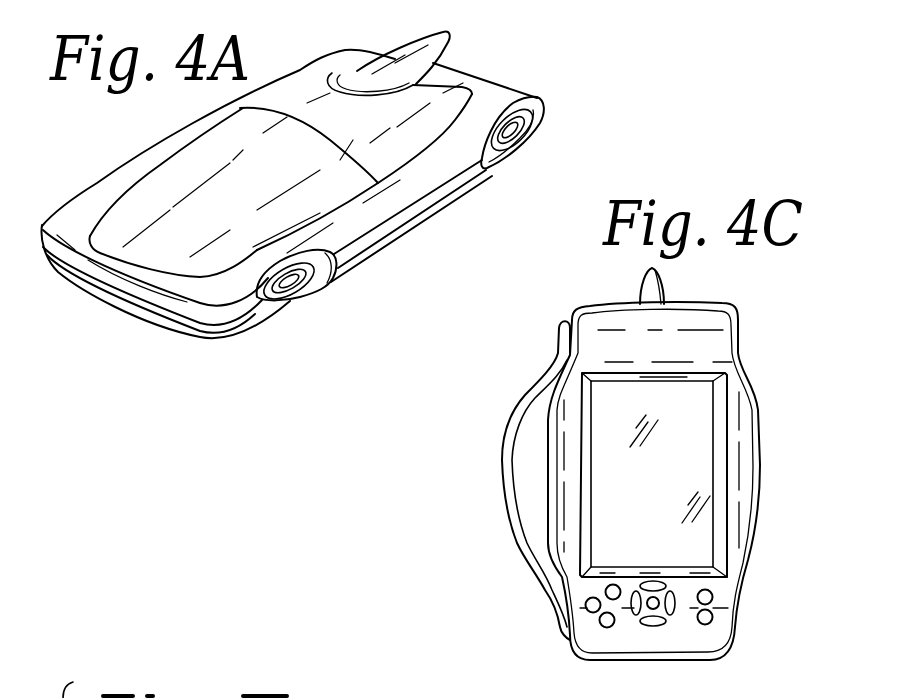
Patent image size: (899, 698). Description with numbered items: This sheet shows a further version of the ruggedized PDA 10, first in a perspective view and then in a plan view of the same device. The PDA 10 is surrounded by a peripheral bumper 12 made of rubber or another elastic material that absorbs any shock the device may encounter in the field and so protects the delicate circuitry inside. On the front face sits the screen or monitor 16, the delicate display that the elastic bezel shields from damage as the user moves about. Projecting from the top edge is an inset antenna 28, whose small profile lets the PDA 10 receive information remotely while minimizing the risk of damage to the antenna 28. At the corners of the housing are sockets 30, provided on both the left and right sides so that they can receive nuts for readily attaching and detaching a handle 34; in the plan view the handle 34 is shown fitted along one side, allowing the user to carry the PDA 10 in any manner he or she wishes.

In FIG. 4A, the ruggedized PDA 10 is at (373, 172).
In FIG. 4C, the ruggedized PDA 10 is at (641, 459).
In FIG. 4A, the peripheral bumper 12 is at (289, 194).
In FIG. 4C, the peripheral bumper 12 is at (654, 481).
In FIG. 4C, the screen or monitor 16 is at (700, 400).
In FIG. 4A, the inset antenna 28 is at (448, 35).
In FIG. 4C, the inset antenna 28 is at (667, 283).
In FIG. 4A, the sockets 30 is at (511, 131).
In FIG. 4C, the handle 34 is at (537, 573).